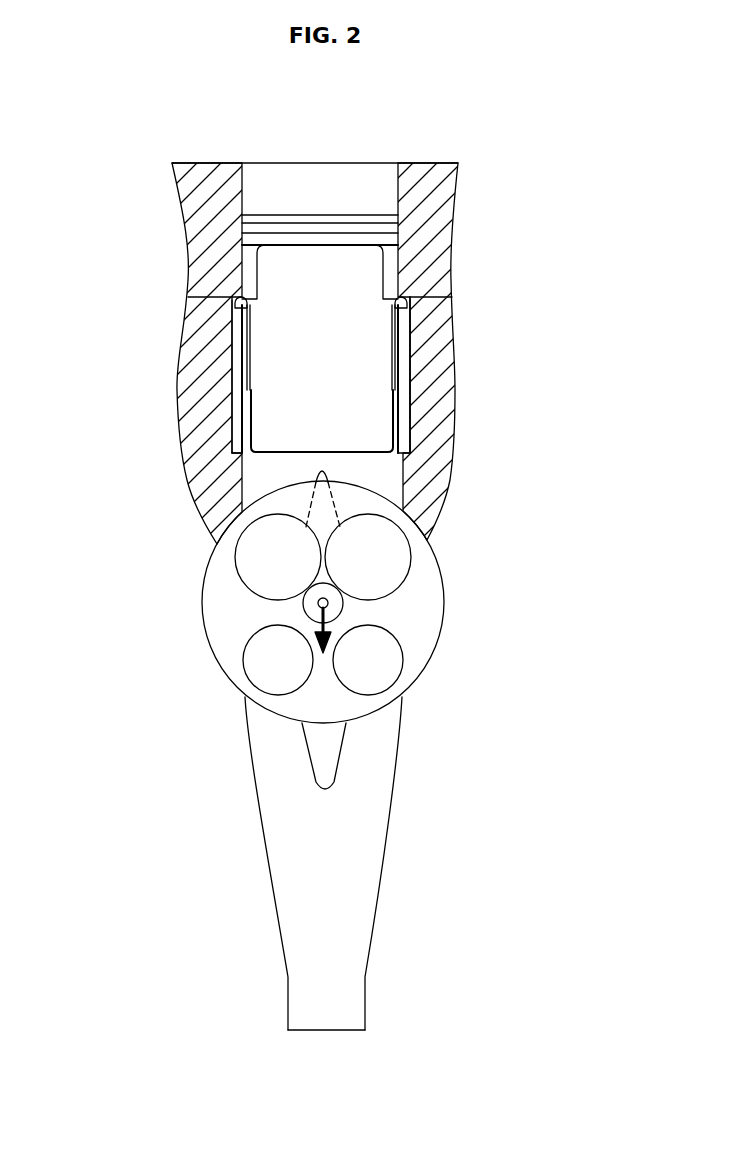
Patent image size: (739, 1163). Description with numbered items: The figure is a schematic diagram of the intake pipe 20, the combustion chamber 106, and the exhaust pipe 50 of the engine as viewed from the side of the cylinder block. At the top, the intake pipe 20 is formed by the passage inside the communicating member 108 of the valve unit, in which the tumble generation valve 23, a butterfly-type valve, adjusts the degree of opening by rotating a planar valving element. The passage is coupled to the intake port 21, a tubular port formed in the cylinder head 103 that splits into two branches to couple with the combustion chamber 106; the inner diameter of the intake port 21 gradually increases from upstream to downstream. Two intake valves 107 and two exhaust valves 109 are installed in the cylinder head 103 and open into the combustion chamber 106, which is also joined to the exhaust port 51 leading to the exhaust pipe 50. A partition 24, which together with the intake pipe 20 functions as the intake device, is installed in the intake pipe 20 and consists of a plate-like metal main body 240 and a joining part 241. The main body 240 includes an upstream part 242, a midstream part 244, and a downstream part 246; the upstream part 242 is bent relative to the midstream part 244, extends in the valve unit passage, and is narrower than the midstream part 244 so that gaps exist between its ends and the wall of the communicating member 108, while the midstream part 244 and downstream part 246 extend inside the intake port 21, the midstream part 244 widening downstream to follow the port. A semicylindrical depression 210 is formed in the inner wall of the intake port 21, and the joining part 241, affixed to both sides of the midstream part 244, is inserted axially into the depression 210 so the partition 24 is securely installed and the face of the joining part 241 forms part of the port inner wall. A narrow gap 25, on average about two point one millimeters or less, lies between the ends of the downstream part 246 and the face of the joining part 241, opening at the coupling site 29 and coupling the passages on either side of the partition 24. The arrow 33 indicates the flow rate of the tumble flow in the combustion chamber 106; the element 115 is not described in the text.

The intake pipe 20 is at (320, 160).
The intake port 21 is at (236, 508).
The tumble generation valve 23 is at (452, 186).
The communicating member 108 is at (440, 243).
The main body 240 is at (215, 320).
The upstream part 242 is at (320, 268).
The midstream part 244 is at (320, 325).
The downstream part 246 is at (322, 437).
The semicylindrical depression 210 is at (240, 334).
The coupling site 29 is at (248, 369).
The partition 24 is at (414, 373).
The joining part 241 is at (240, 397).
The cylinder head 103 is at (445, 425).
The gap 25 is at (243, 458).
The combustion chamber 106 is at (407, 633).
The intake valves 107 is at (253, 567).
The exhaust valves 109 is at (270, 668).
The center nozzle 115 is at (340, 593).
The arrow 33 is at (340, 585).
The exhaust port 51 is at (380, 778).
The exhaust pipe 50 is at (326, 1033).